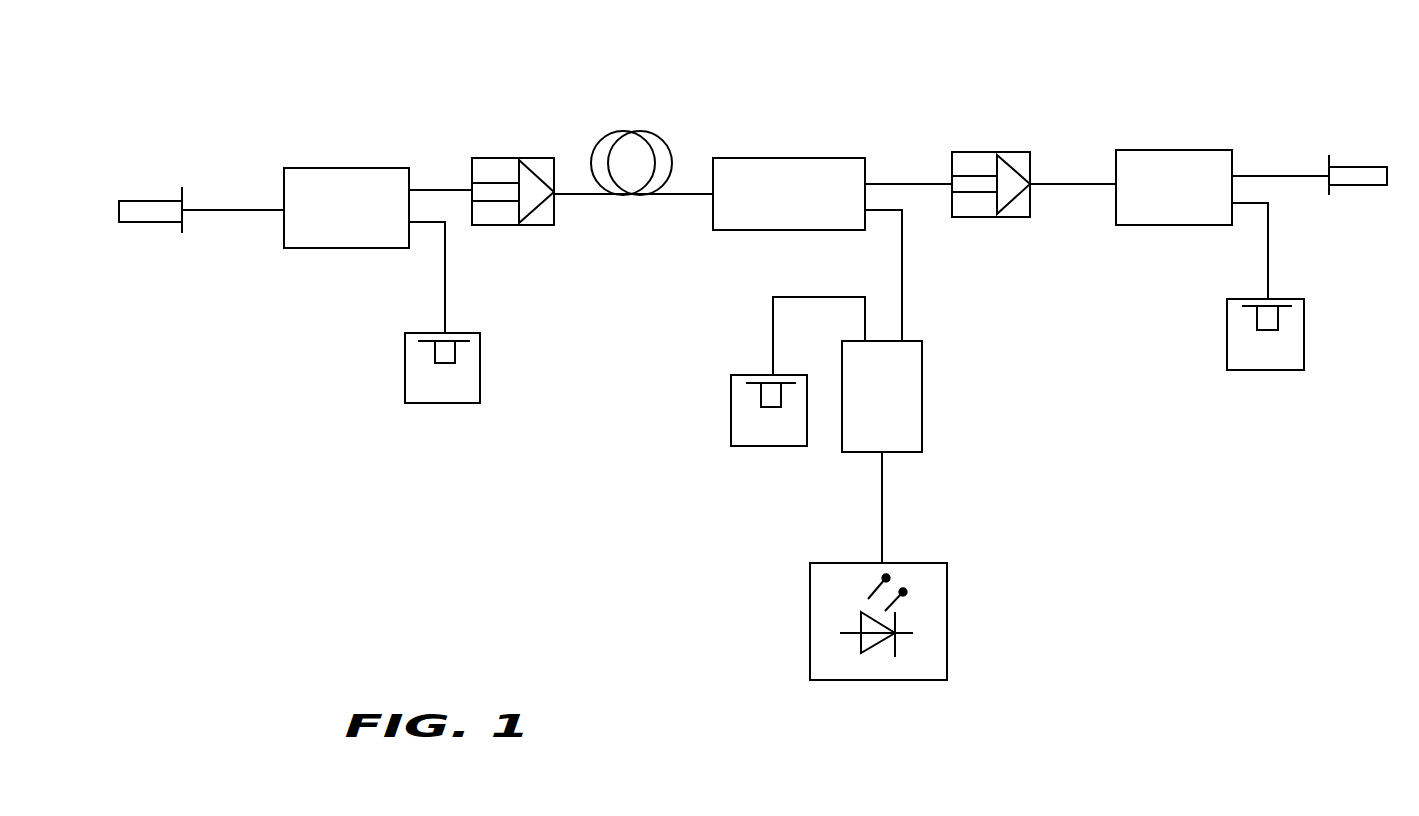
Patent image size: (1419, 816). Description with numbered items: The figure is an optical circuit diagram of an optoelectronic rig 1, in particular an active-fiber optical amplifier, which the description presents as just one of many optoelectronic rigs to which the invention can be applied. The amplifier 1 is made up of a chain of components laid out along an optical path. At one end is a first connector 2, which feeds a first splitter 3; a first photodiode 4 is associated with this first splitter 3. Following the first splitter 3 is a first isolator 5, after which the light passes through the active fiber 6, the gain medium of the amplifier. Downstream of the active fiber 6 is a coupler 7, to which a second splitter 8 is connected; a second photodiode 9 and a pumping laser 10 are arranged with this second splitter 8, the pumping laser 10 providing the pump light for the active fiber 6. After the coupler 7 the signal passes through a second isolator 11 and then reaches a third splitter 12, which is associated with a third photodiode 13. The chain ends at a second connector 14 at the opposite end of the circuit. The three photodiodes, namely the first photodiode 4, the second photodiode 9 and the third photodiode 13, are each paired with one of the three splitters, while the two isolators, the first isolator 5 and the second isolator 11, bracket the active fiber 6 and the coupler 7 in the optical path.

The optoelectronic rig 1 is at (1024, 78).
The first connector 2 is at (150, 215).
The first splitter 3 is at (310, 240).
The first photodiode 4 is at (432, 388).
The first isolator 5 is at (502, 172).
The active fiber 6 is at (633, 128).
The coupler 7 is at (752, 210).
The second splitter 8 is at (908, 400).
The second photodiode 9 is at (740, 417).
The pumping laser 10 is at (940, 595).
The second isolator 11 is at (980, 210).
The third splitter 12 is at (1172, 205).
The third photodiode 13 is at (1278, 355).
The second connector 14 is at (1375, 182).